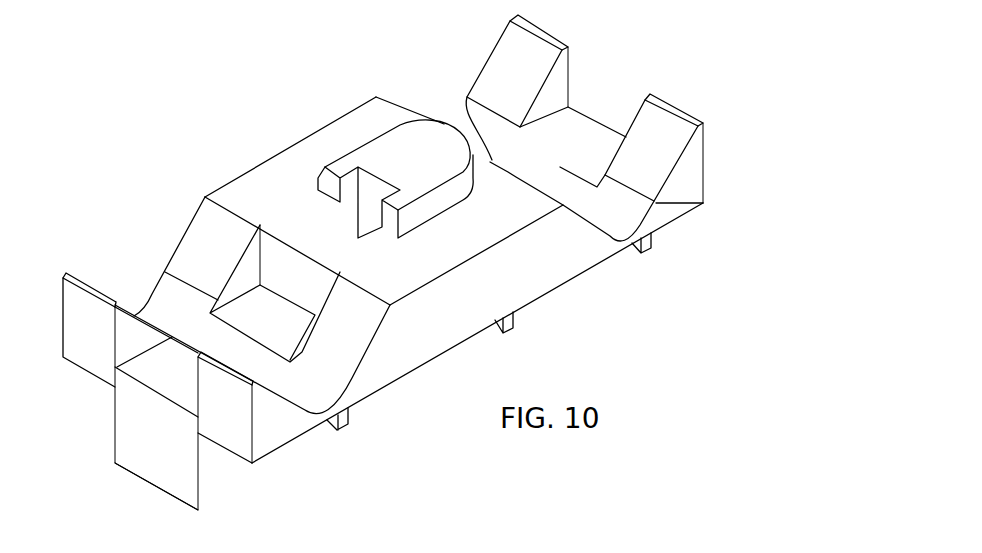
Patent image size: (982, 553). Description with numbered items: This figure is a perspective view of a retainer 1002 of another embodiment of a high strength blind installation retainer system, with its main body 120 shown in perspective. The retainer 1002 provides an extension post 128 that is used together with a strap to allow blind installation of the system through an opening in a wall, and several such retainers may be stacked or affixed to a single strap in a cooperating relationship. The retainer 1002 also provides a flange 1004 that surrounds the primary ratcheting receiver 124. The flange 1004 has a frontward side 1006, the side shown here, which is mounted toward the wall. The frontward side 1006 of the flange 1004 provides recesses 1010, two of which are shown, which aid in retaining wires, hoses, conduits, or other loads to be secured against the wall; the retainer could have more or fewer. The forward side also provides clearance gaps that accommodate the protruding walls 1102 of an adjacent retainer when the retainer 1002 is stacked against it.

The body 120 is at (412, 266).
The primary ratcheting receiver 124 is at (333, 217).
The extension post 128 is at (371, 179).
The retainer 1002 is at (250, 170).
The flange 1004 is at (596, 114).
The frontward side 1006 is at (448, 188).
The recesses 1010 is at (243, 307).
The walls 1102 is at (146, 395).